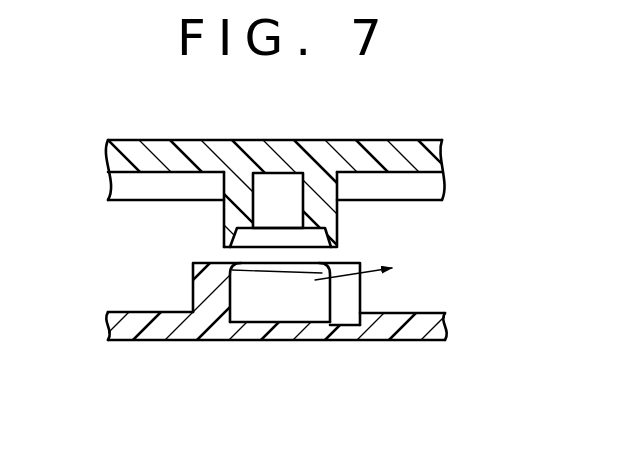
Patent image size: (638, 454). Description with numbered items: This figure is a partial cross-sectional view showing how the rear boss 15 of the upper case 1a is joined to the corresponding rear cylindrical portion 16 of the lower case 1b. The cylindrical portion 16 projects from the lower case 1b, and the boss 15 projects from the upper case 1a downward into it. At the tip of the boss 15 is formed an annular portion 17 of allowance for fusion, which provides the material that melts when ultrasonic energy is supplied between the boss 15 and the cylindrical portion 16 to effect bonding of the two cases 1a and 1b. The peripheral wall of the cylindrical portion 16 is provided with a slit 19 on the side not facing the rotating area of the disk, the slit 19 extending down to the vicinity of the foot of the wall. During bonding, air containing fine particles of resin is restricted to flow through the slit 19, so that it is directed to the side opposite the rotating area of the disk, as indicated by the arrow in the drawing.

The upper case 1a is at (401, 152).
The lower case 1b is at (331, 328).
The boss 15 is at (235, 205).
The cylindrical portion 16 is at (196, 279).
The annular portion of allowance for fusion 17 is at (340, 222).
The slit 19 is at (351, 296).